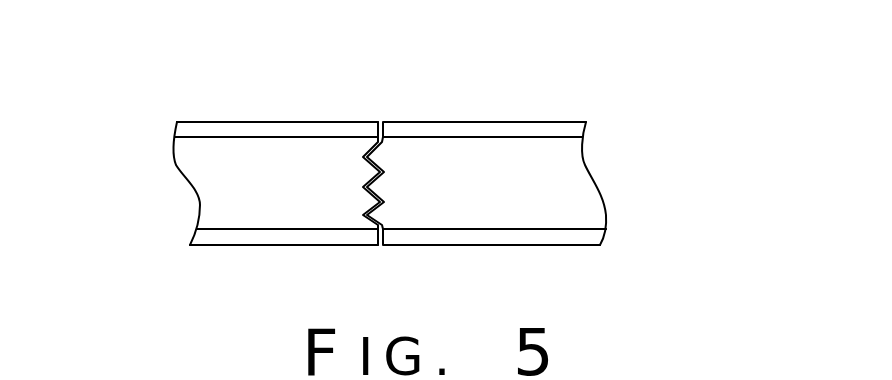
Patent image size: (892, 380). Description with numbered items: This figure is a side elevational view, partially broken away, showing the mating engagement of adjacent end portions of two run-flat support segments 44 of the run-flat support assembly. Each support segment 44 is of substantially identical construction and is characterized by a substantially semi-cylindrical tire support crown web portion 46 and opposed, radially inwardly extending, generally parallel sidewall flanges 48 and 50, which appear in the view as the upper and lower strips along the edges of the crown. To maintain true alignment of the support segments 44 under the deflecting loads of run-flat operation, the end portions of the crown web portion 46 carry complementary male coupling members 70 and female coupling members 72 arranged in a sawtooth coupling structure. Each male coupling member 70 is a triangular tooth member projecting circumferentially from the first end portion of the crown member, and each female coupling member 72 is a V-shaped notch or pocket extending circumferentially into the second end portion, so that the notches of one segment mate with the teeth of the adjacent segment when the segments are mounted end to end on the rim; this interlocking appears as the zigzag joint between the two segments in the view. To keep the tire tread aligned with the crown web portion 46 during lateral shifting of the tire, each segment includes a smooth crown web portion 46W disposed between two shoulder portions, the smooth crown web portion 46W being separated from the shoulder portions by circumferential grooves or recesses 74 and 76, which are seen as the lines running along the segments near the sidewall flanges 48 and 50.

The support segment 44 is at (174, 165).
The tire support crown web portion 46 is at (587, 158).
The smooth crown web portion 46W is at (565, 193).
The sidewall flange 48 is at (240, 246).
The sidewall flange 50 is at (230, 121).
The male coupling member 70 is at (363, 172).
The female coupling member 72 is at (385, 168).
The circumferential groove 74 is at (227, 229).
The circumferential groove 76 is at (192, 137).